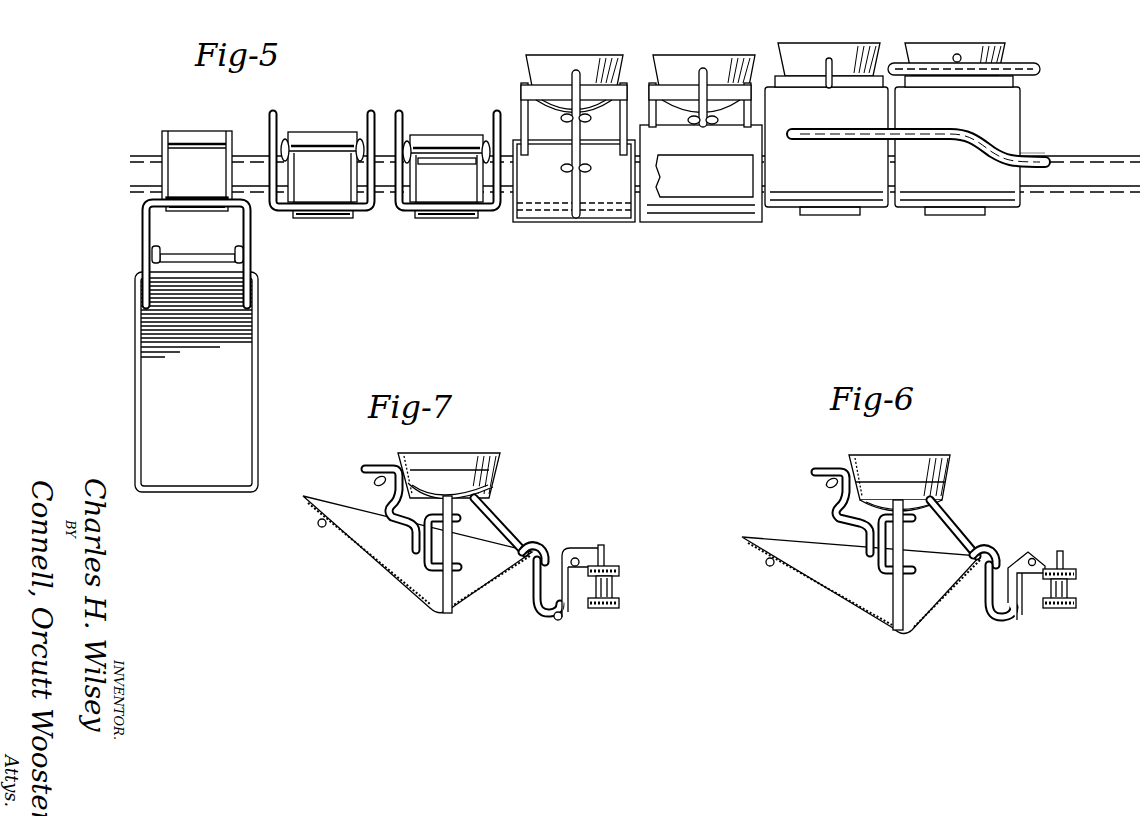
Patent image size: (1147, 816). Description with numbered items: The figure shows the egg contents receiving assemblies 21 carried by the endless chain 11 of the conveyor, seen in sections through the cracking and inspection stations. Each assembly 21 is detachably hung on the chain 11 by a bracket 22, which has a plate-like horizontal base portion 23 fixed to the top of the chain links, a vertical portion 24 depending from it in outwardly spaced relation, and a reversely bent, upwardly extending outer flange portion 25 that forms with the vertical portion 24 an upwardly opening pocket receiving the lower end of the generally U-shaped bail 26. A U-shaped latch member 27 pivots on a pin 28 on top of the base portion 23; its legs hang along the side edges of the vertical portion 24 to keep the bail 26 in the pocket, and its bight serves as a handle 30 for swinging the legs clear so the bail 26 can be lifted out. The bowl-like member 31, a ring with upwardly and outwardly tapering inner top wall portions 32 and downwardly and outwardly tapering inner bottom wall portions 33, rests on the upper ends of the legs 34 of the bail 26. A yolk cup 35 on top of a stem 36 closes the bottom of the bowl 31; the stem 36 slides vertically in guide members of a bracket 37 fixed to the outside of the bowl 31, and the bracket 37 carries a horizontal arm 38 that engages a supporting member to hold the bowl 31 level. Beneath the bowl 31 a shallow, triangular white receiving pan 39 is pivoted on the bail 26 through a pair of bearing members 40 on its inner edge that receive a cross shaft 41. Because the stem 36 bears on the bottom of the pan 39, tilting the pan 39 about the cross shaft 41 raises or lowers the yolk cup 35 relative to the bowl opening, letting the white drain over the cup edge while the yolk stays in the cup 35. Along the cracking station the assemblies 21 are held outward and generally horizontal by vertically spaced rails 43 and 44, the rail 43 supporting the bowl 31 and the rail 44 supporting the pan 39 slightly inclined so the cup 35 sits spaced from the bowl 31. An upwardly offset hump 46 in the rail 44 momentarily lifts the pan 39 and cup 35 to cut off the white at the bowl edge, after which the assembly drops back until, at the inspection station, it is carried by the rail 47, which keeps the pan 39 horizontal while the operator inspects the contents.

In FIG. 5, the endless chain 11 is at (1050, 195).
In FIG. 7, the endless chain 11 is at (614, 588).
In FIG. 6, the endless chain 11 is at (1069, 592).
In FIG. 7, the egg contents receiving assembly 21 is at (358, 556).
In FIG. 7, the bracket 22 is at (584, 612).
In FIG. 6, the bracket 22 is at (1026, 614).
In FIG. 7, the horizontal base portion 23 is at (620, 566).
In FIG. 6, the horizontal base portion 23 is at (1077, 571).
In FIG. 5, the vertical portion 24 is at (322, 185).
In FIG. 7, the vertical portion 24 is at (598, 600).
In FIG. 6, the vertical portion 24 is at (1030, 610).
In FIG. 5, the outer flange portion 25 is at (318, 218).
In FIG. 7, the outer flange portion 25 is at (558, 622).
In FIG. 5, the bail 26 is at (142, 224).
In FIG. 7, the bail 26 is at (536, 590).
In FIG. 6, the bail 26 is at (988, 595).
In FIG. 5, the latch member 27 is at (203, 131).
In FIG. 7, the latch member 27 is at (580, 548).
In FIG. 6, the latch member 27 is at (1012, 560).
In FIG. 7, the pin 28 is at (580, 556).
In FIG. 6, the pin 28 is at (1036, 560).
In FIG. 5, the handle 30 is at (340, 135).
In FIG. 7, the handle 30 is at (606, 554).
In FIG. 6, the handle 30 is at (1066, 555).
In FIG. 5, the bowl-like member 31 is at (560, 62).
In FIG. 7, the bowl-like member 31 is at (496, 456).
In FIG. 6, the bowl-like member 31 is at (948, 460).
In FIG. 7, the inner top wall portions 32 is at (426, 458).
In FIG. 7, the inner bottom wall portions 33 is at (450, 499).
In FIG. 5, the legs 34 is at (520, 98).
In FIG. 7, the legs 34 is at (494, 516).
In FIG. 6, the legs 34 is at (948, 516).
In FIG. 7, the yolk cup 35 is at (440, 490).
In FIG. 6, the yolk cup 35 is at (906, 512).
In FIG. 5, the stem 36 is at (580, 183).
In FIG. 7, the stem 36 is at (454, 545).
In FIG. 6, the stem 36 is at (905, 590).
In FIG. 5, the bracket 37 is at (566, 166).
In FIG. 7, the bracket 37 is at (430, 560).
In FIG. 6, the bracket 37 is at (866, 553).
In FIG. 7, the arm 38 is at (368, 466).
In FIG. 6, the arm 38 is at (822, 470).
In FIG. 5, the white receiving pan 39 is at (258, 372).
In FIG. 7, the white receiving pan 39 is at (385, 568).
In FIG. 6, the white receiving pan 39 is at (845, 594).
In FIG. 5, the bearing members 40 is at (243, 254).
In FIG. 7, the bearing members 40 is at (532, 566).
In FIG. 6, the bearing members 40 is at (988, 552).
In FIG. 5, the cross shaft 41 is at (203, 258).
In FIG. 5, the supporting rail 43 is at (1022, 64).
In FIG. 7, the supporting rail 43 is at (373, 481).
In FIG. 6, the supporting rail 43 is at (825, 484).
In FIG. 5, the pan supporting rail 44 is at (1028, 160).
In FIG. 6, the pan supporting rail 44 is at (770, 568).
In FIG. 5, the hump 46 is at (955, 133).
In FIG. 7, the hump 46 is at (316, 524).
In FIG. 5, the rail 47 is at (688, 198).